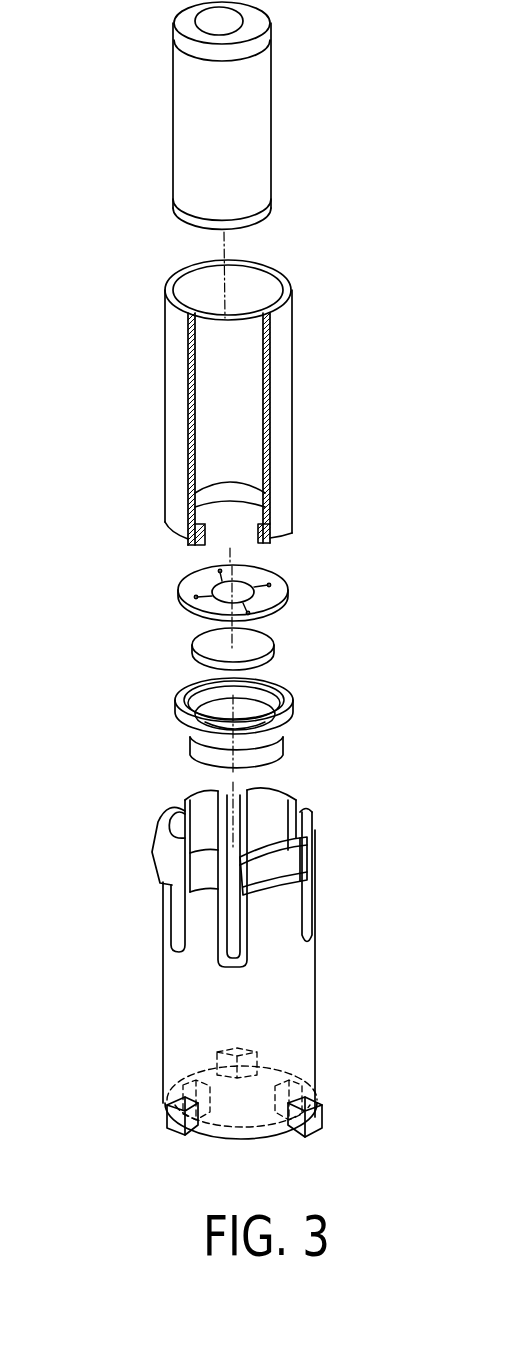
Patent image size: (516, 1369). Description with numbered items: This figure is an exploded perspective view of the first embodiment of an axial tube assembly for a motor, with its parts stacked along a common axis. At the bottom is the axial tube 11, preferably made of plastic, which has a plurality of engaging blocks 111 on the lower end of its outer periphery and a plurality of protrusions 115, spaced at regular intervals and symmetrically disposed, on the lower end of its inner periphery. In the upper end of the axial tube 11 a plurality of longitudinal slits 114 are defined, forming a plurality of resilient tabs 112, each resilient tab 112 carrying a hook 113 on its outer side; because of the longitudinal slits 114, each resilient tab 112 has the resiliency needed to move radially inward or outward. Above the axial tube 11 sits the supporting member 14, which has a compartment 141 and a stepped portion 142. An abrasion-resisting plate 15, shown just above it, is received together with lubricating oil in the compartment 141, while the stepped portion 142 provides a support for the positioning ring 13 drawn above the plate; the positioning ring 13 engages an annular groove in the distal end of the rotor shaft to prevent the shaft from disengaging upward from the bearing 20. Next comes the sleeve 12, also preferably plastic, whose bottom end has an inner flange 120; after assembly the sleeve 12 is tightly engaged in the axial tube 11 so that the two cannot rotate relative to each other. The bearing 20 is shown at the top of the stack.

The bearing 20 is at (258, 135).
The sleeve 12 is at (285, 385).
The inner flange 120 is at (272, 525).
The positioning ring 13 is at (280, 598).
The abrasion-resisting plate 15 is at (258, 652).
The supporting member 14 is at (283, 738).
The stepped portion 142 is at (277, 700).
The compartment 141 is at (245, 732).
The axial tube 11 is at (303, 1020).
The longitudinal slits 114 is at (228, 946).
The hook 113 is at (270, 870).
The resilient tabs 112 is at (278, 925).
The protrusions 115 is at (165, 1069).
The engaging blocks 111 is at (322, 1115).